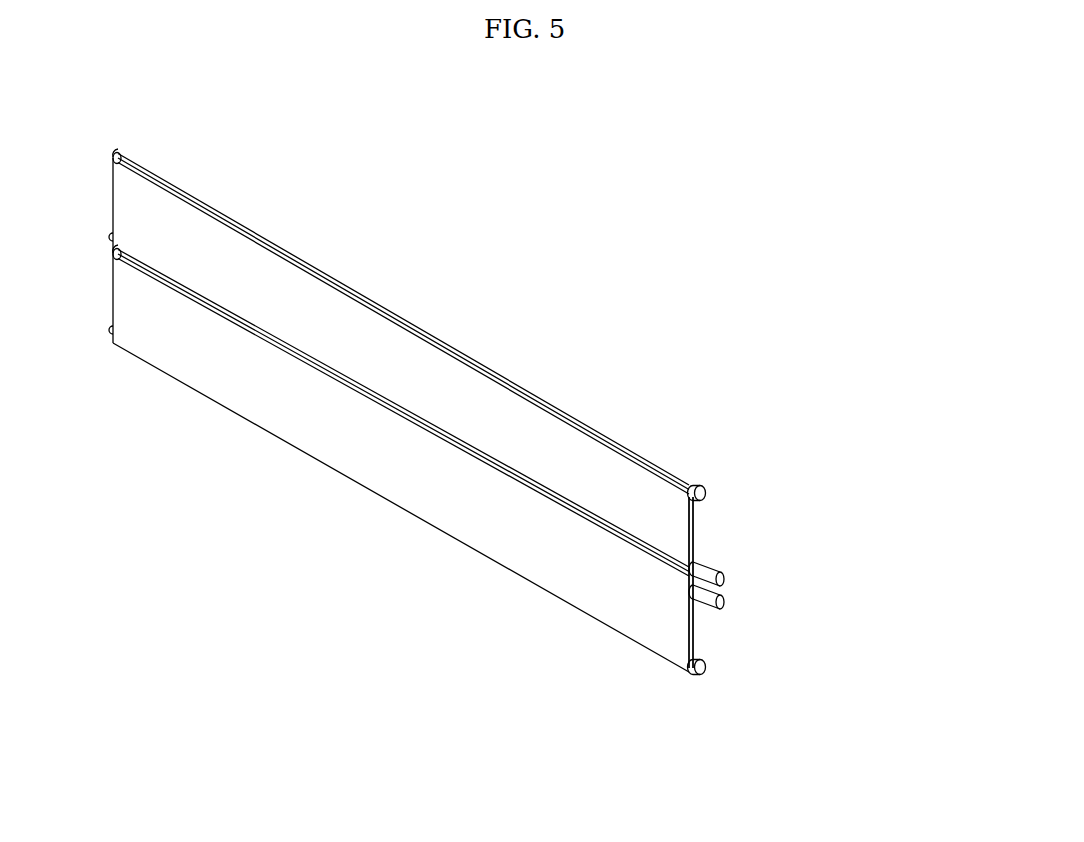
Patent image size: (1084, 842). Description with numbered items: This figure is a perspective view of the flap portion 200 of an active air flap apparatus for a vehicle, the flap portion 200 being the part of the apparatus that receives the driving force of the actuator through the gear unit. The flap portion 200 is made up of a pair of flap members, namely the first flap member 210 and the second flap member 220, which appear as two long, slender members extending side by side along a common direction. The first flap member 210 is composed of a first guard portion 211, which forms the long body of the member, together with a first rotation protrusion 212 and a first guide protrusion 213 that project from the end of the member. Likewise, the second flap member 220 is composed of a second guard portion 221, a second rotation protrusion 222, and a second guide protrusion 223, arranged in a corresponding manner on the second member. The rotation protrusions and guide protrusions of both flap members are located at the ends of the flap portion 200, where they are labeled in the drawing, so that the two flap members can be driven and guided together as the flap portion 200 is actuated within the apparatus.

The flap portion 200 is at (404, 226).
The first flap member 210 is at (830, 589).
The first guard portion 211 is at (667, 538).
The first rotation protrusion 212 is at (713, 577).
The first guide protrusion 213 is at (705, 496).
The second flap member 220 is at (641, 744).
The second guard portion 221 is at (632, 620).
The second rotation protrusion 222 is at (681, 607).
The second guide protrusion 223 is at (695, 672).